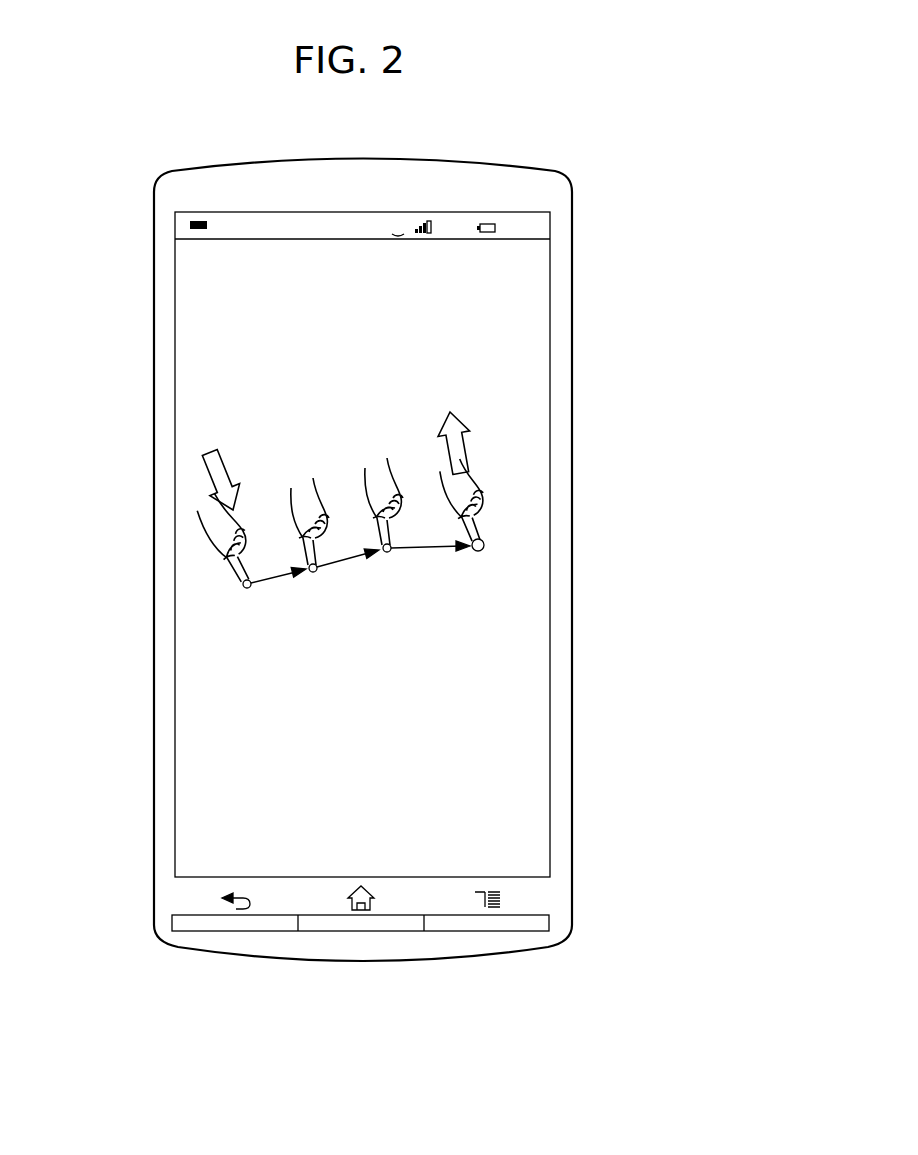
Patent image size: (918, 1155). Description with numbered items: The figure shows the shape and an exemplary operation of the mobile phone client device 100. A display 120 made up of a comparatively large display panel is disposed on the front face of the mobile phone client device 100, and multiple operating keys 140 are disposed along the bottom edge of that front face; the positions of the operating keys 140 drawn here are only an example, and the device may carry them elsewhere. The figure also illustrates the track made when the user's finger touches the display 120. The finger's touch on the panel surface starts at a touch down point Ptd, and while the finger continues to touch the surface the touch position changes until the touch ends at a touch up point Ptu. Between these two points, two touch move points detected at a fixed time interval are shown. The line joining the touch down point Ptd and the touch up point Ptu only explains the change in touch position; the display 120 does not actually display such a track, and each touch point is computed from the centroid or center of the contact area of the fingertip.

The mobile phone client device 100 is at (524, 165).
The display 120 is at (552, 430).
The operating keys 140 is at (455, 922).
The touch down point Ptd is at (247, 588).
The touch up point Ptu is at (481, 552).